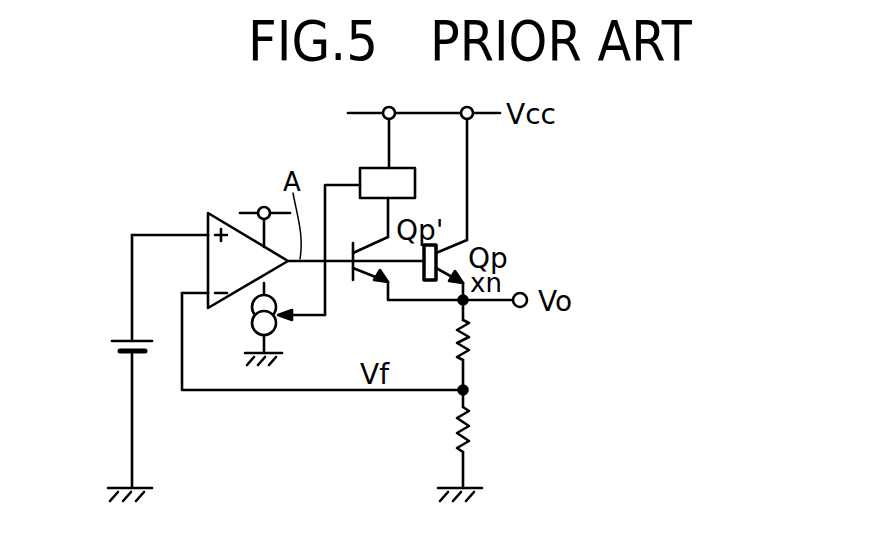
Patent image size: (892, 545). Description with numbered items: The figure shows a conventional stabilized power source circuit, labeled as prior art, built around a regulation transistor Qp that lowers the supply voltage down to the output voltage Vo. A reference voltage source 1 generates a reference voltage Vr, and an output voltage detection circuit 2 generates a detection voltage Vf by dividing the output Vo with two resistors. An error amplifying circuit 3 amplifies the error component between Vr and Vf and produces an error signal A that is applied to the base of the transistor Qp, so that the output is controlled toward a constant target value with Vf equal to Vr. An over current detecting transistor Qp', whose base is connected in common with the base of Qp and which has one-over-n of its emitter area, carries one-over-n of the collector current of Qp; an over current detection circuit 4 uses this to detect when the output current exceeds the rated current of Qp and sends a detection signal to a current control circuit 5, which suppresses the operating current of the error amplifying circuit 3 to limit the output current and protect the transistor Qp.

The reference voltage source 1 is at (116, 348).
The output voltage detection circuit 2 is at (445, 406).
The error amplifying circuit 3 is at (216, 213).
The over current detection circuit 4 is at (362, 167).
The current control circuit 5 is at (253, 325).